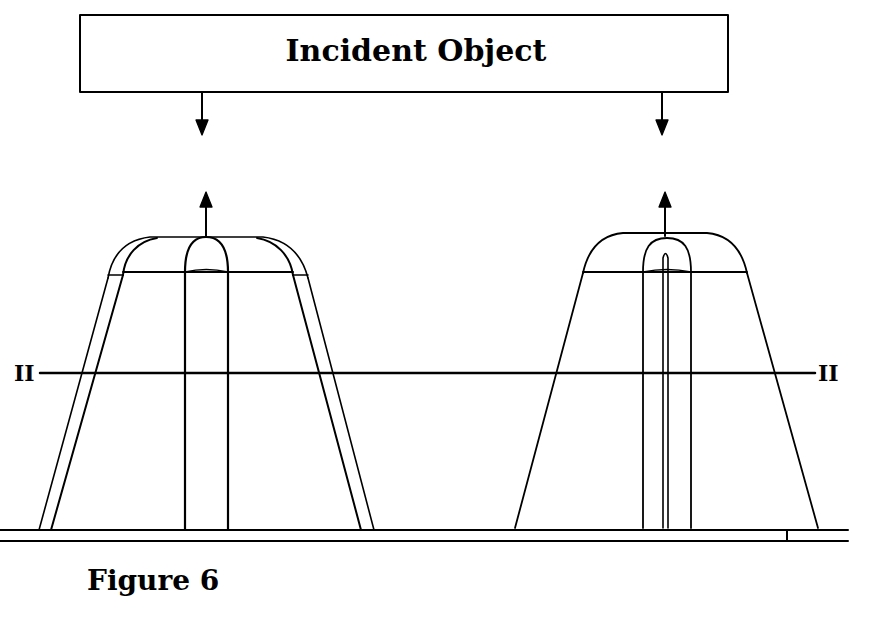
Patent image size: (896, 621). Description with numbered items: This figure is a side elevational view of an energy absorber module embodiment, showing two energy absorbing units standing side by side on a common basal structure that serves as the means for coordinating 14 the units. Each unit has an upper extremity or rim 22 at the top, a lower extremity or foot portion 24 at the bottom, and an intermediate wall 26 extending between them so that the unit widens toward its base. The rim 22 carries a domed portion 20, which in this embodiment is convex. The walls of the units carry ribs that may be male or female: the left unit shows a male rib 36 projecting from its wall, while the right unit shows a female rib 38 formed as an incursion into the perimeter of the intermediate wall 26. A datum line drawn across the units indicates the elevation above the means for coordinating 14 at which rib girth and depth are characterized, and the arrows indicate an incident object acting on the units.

The means for coordinating 14 is at (472, 532).
The domed portion 20 is at (223, 233).
The upper perimeter 22 is at (265, 268).
The lower perimeter 24 is at (328, 527).
The intermediate wall 26 is at (770, 457).
The male rib 36 is at (312, 328).
The female rib 38 is at (680, 343).